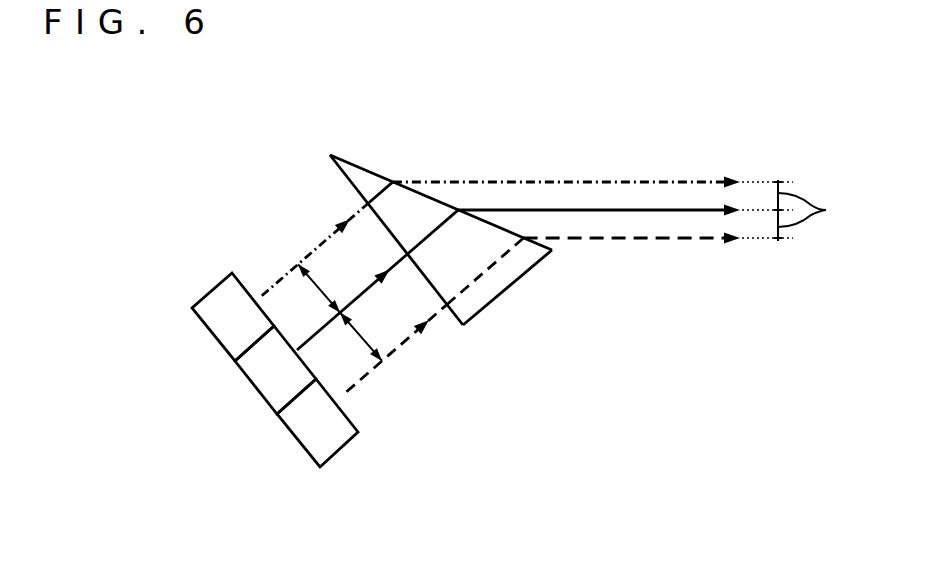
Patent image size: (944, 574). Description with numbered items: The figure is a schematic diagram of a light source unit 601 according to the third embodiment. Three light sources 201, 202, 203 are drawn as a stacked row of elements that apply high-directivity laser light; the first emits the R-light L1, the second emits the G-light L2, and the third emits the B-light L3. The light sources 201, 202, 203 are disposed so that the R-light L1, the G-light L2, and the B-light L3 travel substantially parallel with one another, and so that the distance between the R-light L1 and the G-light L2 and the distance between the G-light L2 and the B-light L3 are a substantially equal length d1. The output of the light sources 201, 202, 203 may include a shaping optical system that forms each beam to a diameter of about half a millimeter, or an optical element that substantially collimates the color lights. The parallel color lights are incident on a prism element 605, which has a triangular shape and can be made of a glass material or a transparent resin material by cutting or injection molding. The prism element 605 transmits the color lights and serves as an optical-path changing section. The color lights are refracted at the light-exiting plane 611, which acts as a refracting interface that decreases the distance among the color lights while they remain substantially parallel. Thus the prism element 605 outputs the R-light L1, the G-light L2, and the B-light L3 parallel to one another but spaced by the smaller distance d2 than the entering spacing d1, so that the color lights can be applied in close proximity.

The light source 201 is at (212, 336).
The light source 202 is at (253, 386).
The light source 203 is at (293, 441).
The light source unit 601 is at (450, 212).
The prism element 605 is at (513, 283).
The light-exiting plane 611 is at (360, 167).
The R-light L1 is at (277, 283).
The G-light L2 is at (380, 277).
The B-light L3 is at (351, 397).
The distance d1 is at (340, 312).
The beam spacing after prism d2 is at (813, 210).